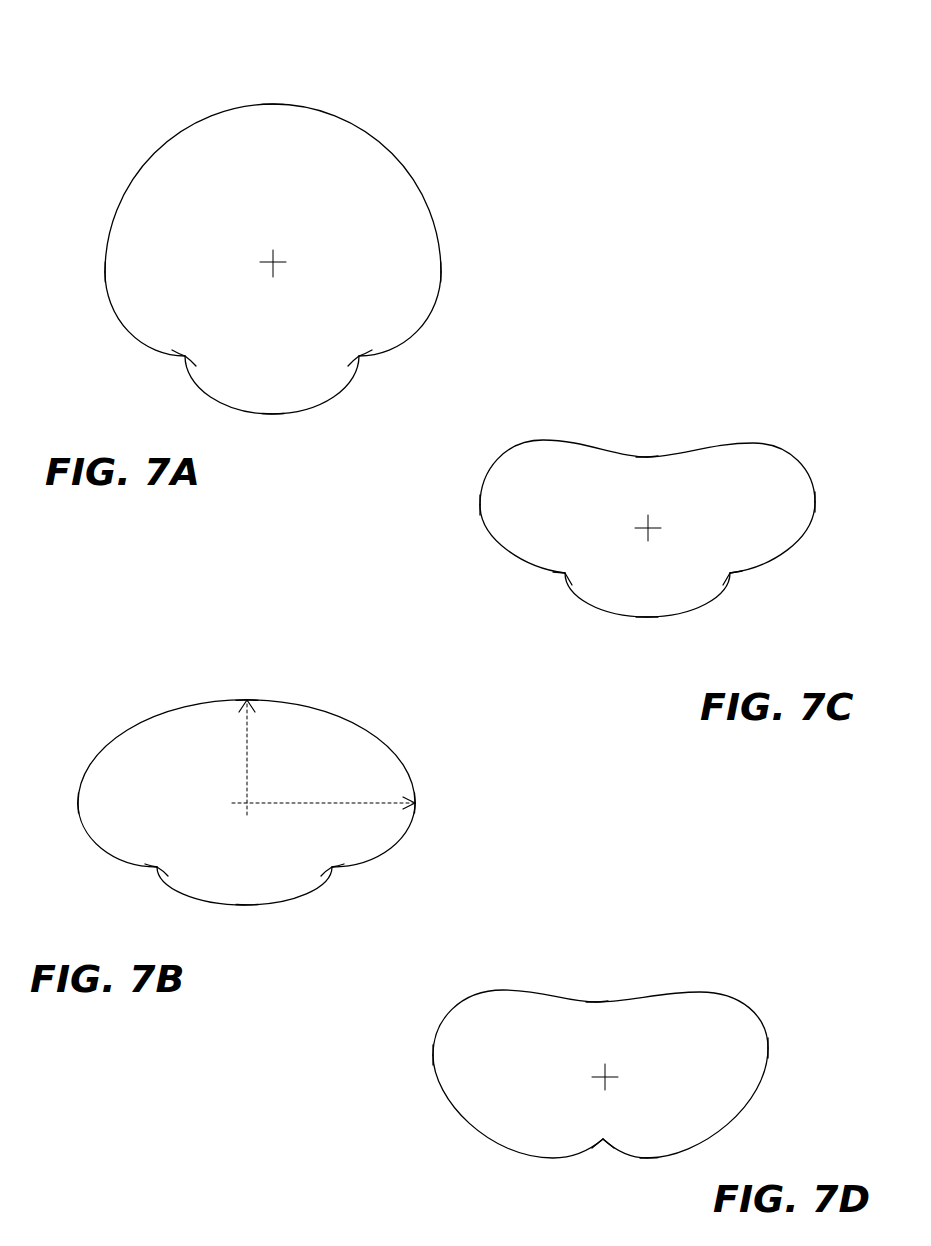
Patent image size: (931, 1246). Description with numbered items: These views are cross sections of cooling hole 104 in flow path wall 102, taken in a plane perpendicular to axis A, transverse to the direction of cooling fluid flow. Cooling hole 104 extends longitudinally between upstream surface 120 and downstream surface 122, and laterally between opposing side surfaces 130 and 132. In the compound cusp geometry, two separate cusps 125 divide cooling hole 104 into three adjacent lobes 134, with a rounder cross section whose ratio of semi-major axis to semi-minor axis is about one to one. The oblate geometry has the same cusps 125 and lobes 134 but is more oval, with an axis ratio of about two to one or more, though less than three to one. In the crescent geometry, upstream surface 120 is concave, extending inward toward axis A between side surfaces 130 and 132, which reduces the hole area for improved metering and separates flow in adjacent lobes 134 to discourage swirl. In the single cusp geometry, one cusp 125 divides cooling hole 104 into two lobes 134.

In FIG. 7A, the flow path wall 102 is at (486, 162).
In FIG. 7B, the flow path wall 102 is at (388, 699).
In FIG. 7C, the flow path wall 102 is at (835, 432).
In FIG. 7D, the flow path wall 102 is at (783, 984).
In FIG. 7A, the cooling hole 104 is at (167, 177).
In FIG. 7B, the cooling hole 104 is at (135, 745).
In FIG. 7C, the cooling hole 104 is at (522, 465).
In FIG. 7D, the cooling hole 104 is at (463, 1023).
In FIG. 7A, the upstream surface 120 is at (283, 104).
In FIG. 7B, the upstream surface 120 is at (247, 700).
In FIG. 7C, the upstream surface 120 is at (647, 457).
In FIG. 7D, the upstream surface 120 is at (597, 1002).
In FIG. 7A, the downstream surface 122 is at (273, 414).
In FIG. 7B, the downstream surface 122 is at (247, 905).
In FIG. 7C, the downstream surface 122 is at (647, 617).
In FIG. 7D, the downstream surface 122 is at (650, 1158).
In FIG. 7A, the cusp 125 is at (185, 357).
In FIG. 7B, the cusp 125 is at (157, 867).
In FIG. 7C, the cusp 125 is at (565, 573).
In FIG. 7D, the cusp 125 is at (603, 1139).
In FIG. 7A, the side surface 130 is at (106, 273).
In FIG. 7B, the side surface 130 is at (78, 803).
In FIG. 7C, the side surface 130 is at (480, 507).
In FIG. 7D, the side surface 130 is at (433, 1060).
In FIG. 7A, the side surface 132 is at (442, 247).
In FIG. 7B, the side surface 132 is at (415, 803).
In FIG. 7C, the side surface 132 is at (815, 502).
In FIG. 7D, the side surface 132 is at (768, 1050).
In FIG. 7A, the lobe 134 is at (186, 314).
In FIG. 7B, the lobe 134 is at (376, 787).
In FIG. 7C, the lobe 134 is at (556, 530).
In FIG. 7D, the lobe 134 is at (534, 1087).